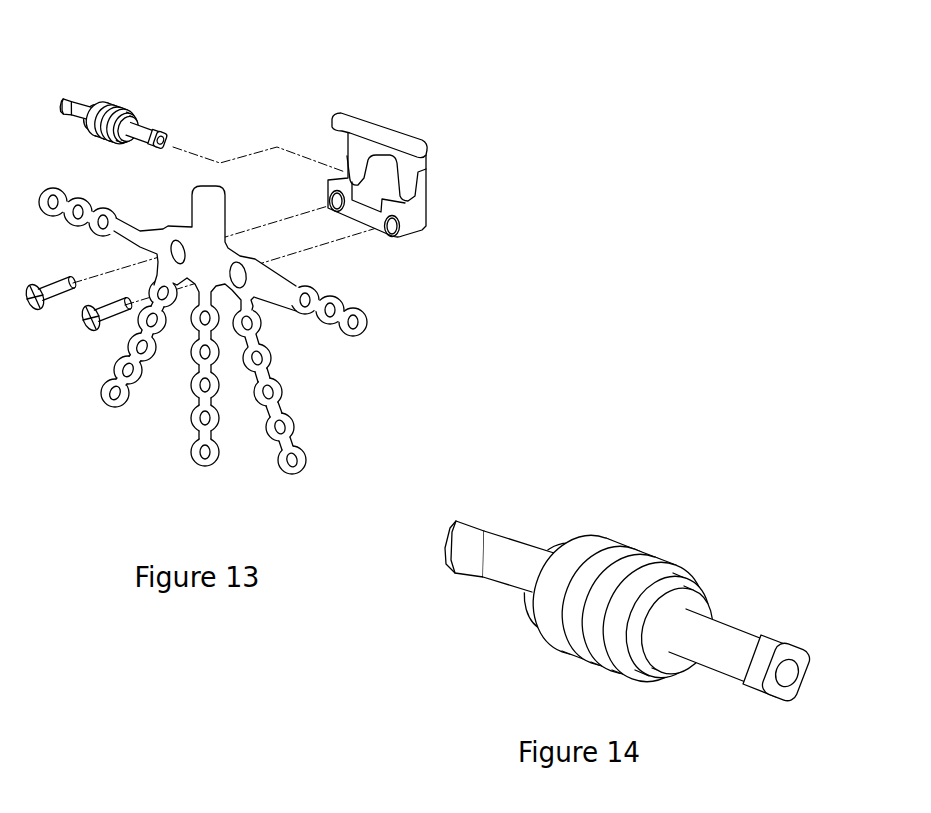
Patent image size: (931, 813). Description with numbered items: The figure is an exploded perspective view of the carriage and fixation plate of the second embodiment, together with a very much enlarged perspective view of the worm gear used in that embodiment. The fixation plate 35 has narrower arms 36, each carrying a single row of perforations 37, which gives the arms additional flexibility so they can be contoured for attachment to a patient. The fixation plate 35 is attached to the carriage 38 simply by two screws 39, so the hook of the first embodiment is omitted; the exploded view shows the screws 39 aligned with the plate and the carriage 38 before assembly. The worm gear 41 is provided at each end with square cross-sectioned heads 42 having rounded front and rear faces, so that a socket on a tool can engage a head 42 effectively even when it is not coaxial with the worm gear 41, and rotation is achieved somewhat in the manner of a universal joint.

In FIG. 13, the fixation plate 35 is at (210, 265).
In FIG. 13, the arms 36 is at (243, 345).
In FIG. 13, the perforations 37 is at (197, 388).
In FIG. 13, the carriage 38 is at (428, 197).
In FIG. 13, the screws 39 is at (113, 313).
In FIG. 13, the worm gear 41 is at (117, 110).
In FIG. 14, the worm gear 41 is at (622, 562).
In FIG. 13, the square cross-sectioned heads 42 is at (168, 133).
In FIG. 14, the square cross-sectioned heads 42 is at (778, 643).